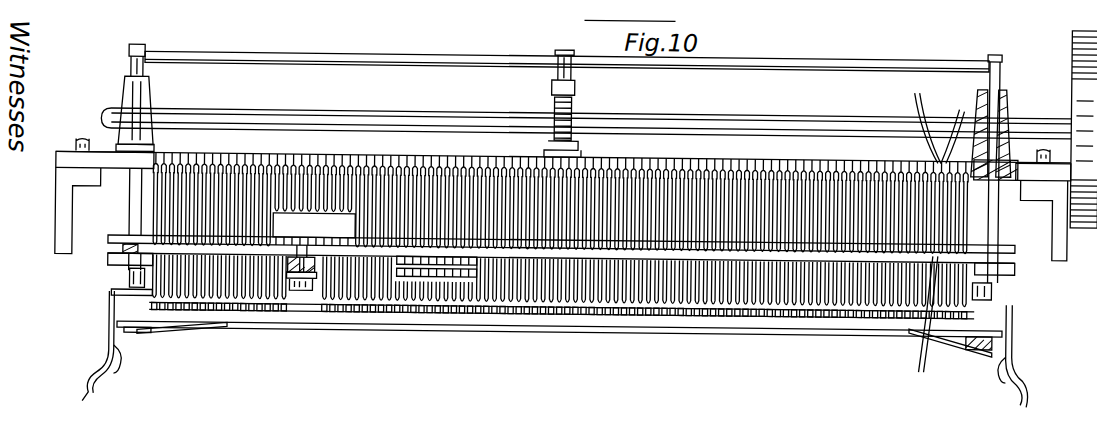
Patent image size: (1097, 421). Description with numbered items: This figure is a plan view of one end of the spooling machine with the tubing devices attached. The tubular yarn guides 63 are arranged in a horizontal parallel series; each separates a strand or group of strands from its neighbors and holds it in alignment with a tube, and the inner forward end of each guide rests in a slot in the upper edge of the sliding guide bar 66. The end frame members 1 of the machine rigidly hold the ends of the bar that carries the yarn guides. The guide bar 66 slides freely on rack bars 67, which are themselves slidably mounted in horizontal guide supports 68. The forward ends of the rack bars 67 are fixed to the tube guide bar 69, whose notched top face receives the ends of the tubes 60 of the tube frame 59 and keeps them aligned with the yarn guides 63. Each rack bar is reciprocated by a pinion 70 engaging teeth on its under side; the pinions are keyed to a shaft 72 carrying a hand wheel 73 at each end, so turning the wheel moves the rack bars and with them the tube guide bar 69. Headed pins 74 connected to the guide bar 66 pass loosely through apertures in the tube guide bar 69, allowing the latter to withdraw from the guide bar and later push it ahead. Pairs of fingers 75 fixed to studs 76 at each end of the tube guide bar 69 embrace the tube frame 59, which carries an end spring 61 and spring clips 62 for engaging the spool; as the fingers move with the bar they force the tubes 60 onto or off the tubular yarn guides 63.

The end frame member 1 is at (68, 231).
The tube frame 59 is at (460, 324).
The tubes 60 is at (590, 297).
The end spring 61 is at (1012, 351).
The spring clips 62 is at (973, 347).
The tubular yarn guides 63 is at (282, 160).
The sliding guide bar 66 is at (108, 245).
The rack bars 67 is at (143, 53).
The guide supports 68 is at (150, 105).
The tube guide bar 69 is at (110, 268).
The pinion 70 is at (575, 102).
The shaft 72 is at (375, 122).
The hand wheel 73 is at (1070, 46).
The headed pins 74 is at (303, 258).
The fingers 75 is at (108, 300).
The studs 76 is at (993, 287).